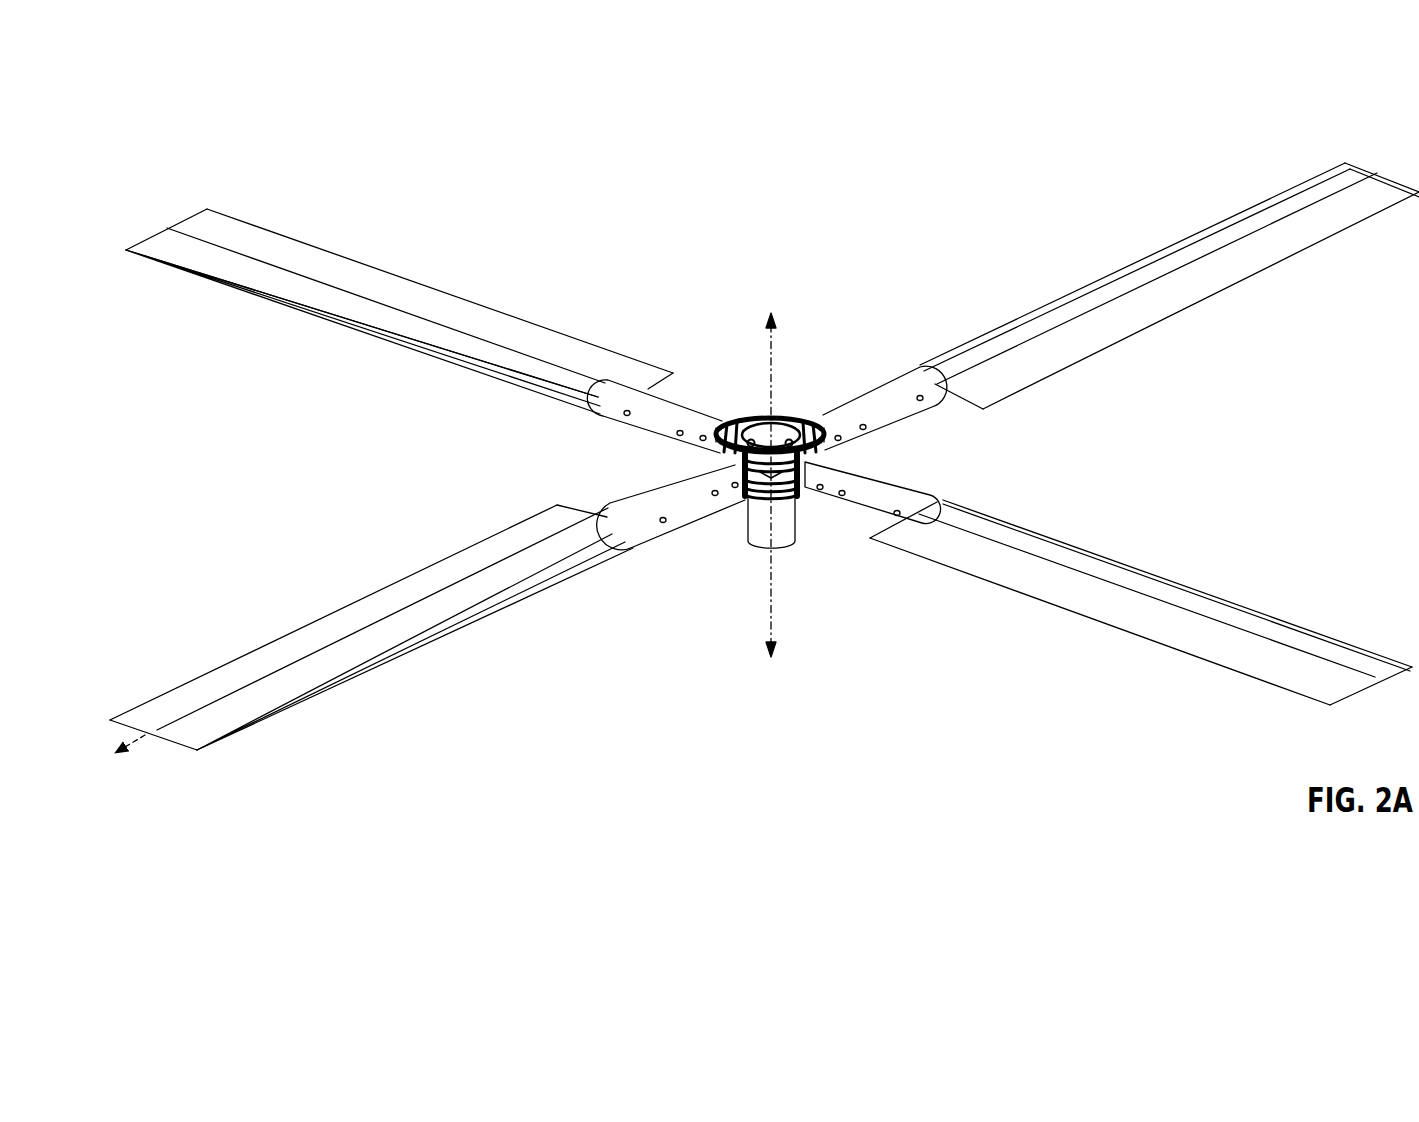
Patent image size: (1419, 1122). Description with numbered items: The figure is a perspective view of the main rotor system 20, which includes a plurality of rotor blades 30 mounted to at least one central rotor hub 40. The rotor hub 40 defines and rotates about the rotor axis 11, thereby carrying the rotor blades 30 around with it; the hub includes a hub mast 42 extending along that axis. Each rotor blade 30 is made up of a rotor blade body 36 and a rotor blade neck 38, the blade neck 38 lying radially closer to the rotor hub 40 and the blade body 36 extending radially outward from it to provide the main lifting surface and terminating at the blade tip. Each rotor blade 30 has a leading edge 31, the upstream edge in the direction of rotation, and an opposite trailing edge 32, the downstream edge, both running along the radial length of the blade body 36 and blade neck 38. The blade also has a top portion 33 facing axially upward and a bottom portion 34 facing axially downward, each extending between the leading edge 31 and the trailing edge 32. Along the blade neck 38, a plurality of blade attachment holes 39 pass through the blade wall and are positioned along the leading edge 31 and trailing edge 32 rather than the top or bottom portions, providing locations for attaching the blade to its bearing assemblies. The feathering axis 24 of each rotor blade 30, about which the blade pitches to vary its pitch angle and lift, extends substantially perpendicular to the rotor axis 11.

The rotor axis 11 is at (773, 368).
The main rotor system 20 is at (801, 329).
The feathering axis 24 is at (140, 752).
The rotor blade 30 is at (764, 455).
The leading edge 31 is at (470, 378).
The trailing edge 32 is at (370, 266).
The top portion 33 is at (980, 527).
The bottom portion 34 is at (1097, 627).
The rotor blade body 36 is at (490, 311).
The rotor blade neck 38 is at (685, 400).
The blade attachment holes 39 is at (899, 512).
The central rotor hub 40 is at (804, 528).
The hub mast 42 is at (750, 518).